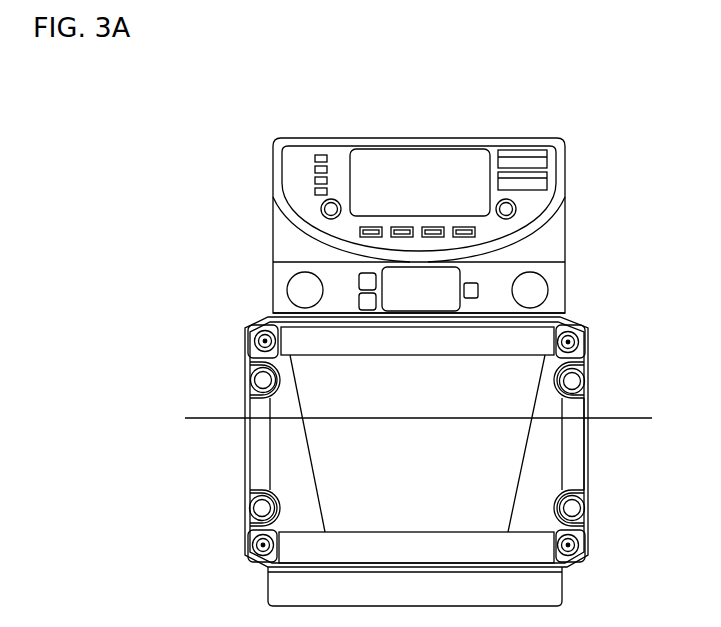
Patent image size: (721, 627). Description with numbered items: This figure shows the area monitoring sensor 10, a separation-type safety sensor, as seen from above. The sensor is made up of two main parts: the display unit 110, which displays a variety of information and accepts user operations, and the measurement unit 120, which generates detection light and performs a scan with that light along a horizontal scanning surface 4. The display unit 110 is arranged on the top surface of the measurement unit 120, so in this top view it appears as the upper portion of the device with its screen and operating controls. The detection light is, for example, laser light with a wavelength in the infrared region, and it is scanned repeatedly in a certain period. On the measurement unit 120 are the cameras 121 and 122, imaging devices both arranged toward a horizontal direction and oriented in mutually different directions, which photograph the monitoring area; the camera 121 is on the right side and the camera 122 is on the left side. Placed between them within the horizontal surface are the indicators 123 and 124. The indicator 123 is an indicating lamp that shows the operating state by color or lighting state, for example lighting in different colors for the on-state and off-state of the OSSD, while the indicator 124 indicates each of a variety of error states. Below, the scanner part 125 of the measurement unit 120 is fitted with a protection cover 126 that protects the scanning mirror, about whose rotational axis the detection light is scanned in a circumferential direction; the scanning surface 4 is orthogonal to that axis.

The area monitoring sensor 10 is at (598, 103).
The display unit 110 is at (566, 199).
The measurement unit 120 is at (569, 295).
The camera 121 is at (548, 275).
The camera 122 is at (293, 276).
The indicator 123 is at (446, 265).
The indicator 124 is at (471, 283).
The scanner part 125 is at (588, 397).
The protection cover 126 is at (566, 445).
The scanning surface 4 is at (638, 418).